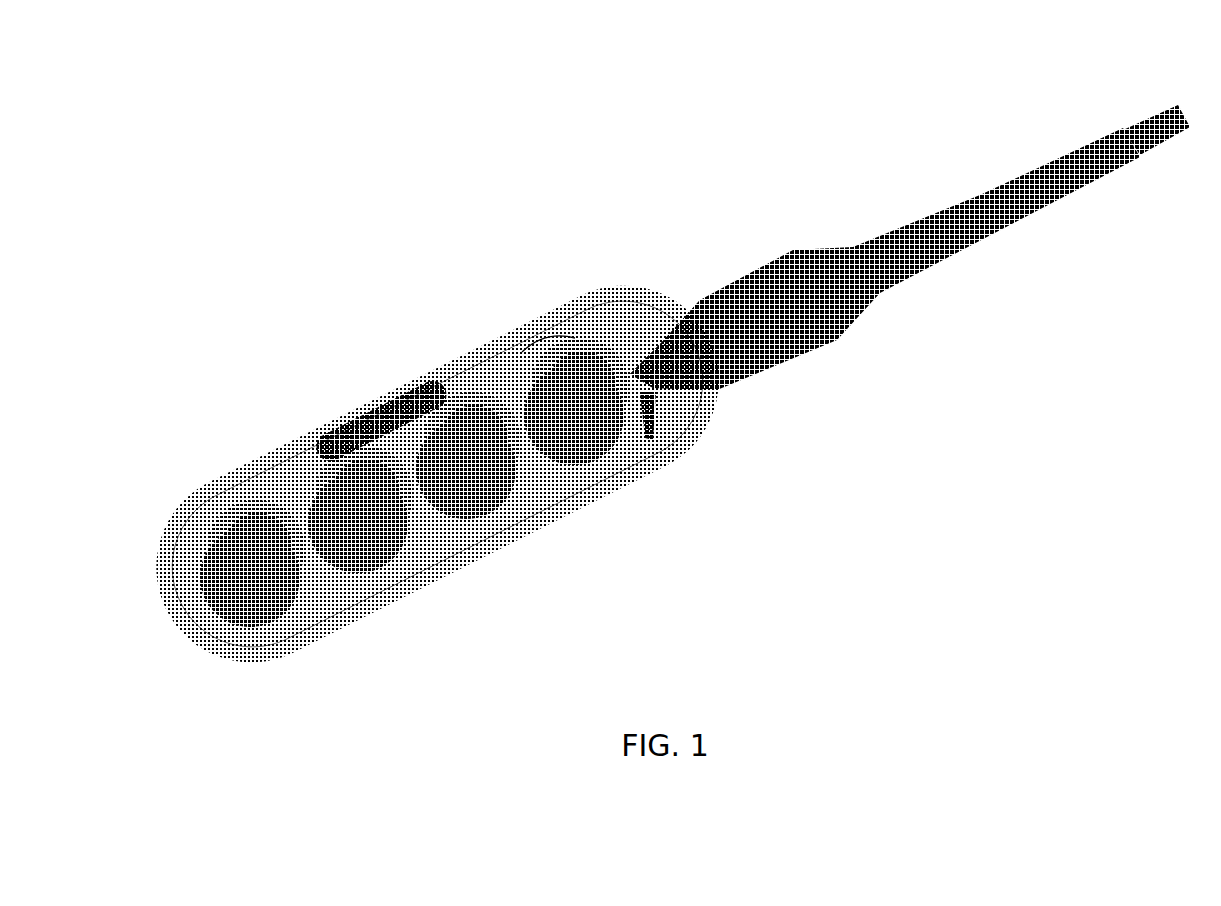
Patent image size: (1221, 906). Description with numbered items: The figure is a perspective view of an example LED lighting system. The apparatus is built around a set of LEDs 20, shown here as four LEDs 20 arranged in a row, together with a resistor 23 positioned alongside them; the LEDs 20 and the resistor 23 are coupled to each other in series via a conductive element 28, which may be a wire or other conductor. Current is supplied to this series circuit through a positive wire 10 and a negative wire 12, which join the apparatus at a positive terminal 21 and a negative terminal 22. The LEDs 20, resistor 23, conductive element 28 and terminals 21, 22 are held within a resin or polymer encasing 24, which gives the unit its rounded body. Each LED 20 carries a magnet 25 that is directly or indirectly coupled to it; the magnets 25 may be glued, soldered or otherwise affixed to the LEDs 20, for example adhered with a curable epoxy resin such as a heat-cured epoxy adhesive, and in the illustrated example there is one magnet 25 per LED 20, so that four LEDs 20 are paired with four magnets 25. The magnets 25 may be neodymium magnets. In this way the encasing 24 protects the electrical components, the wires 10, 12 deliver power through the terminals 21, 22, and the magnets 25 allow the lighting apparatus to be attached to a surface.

The positive wire 10 is at (713, 392).
The negative wire 12 is at (637, 362).
The LEDs 20 is at (268, 670).
The positive terminal 21 is at (670, 463).
The negative terminal 22 is at (530, 355).
The resistor 23 is at (407, 380).
The resin/polymer encasing 24 is at (603, 293).
The magnets 25 is at (257, 670).
The conductive element 28 is at (248, 470).